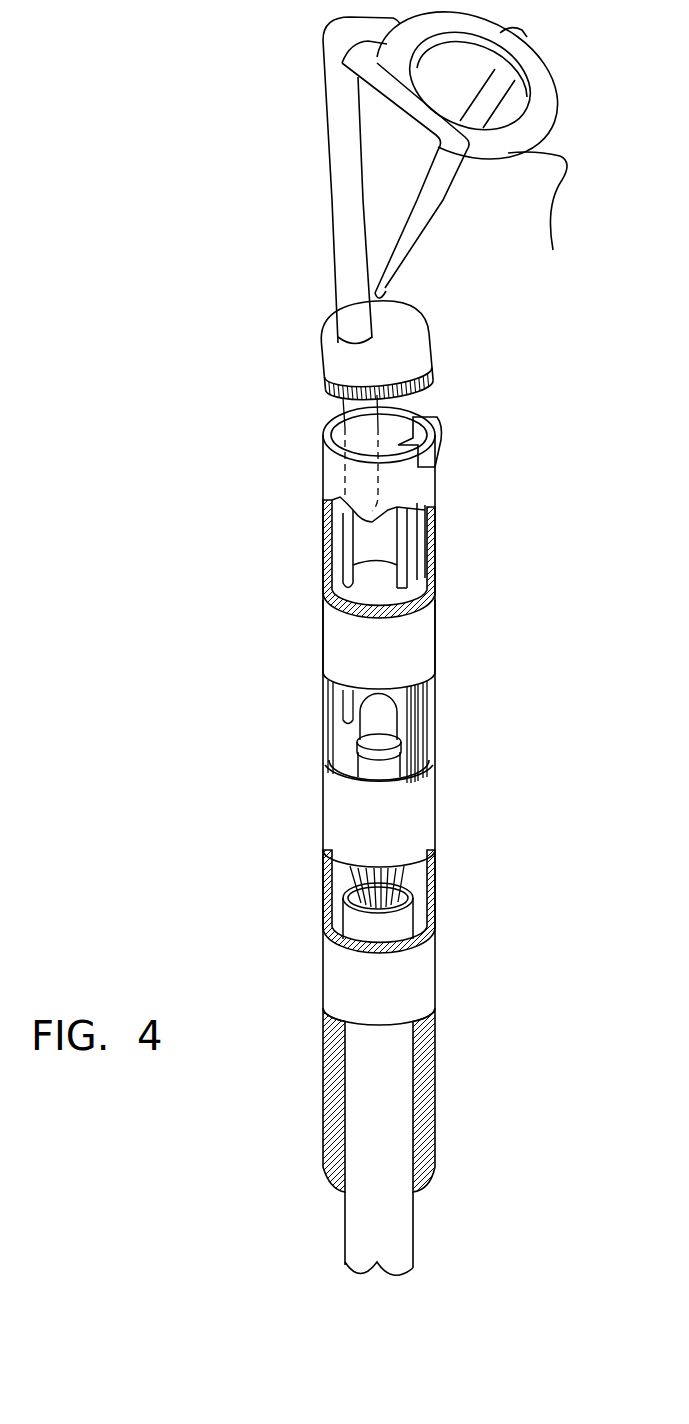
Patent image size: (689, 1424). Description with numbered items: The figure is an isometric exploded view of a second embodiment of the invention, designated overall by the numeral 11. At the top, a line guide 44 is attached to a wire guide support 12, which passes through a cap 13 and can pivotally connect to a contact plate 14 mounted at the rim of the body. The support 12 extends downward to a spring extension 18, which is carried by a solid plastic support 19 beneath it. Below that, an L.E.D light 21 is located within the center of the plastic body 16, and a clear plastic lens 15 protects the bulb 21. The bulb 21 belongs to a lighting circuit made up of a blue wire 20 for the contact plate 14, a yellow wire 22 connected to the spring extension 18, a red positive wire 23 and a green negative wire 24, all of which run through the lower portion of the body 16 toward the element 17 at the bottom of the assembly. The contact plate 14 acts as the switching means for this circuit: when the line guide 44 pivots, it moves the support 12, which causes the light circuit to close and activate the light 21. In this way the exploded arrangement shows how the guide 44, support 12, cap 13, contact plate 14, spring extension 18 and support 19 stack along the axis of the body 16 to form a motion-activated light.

The second embodiment 11 is at (205, 295).
The wire guide support 12 is at (320, 305).
The cap 13 is at (432, 350).
The contact plate 14 is at (430, 430).
The clear plastic lens 15 is at (420, 778).
The plastic body 16 is at (332, 1078).
The rod 17 is at (403, 1242).
The spring extension 18 is at (345, 552).
The solid plastic support 19 is at (417, 653).
The blue wire 20 is at (421, 728).
The L.E.D light 21 is at (380, 717).
The yellow wire 22 is at (352, 777).
The red wire 23 is at (360, 888).
The green wire 24 is at (437, 938).
The line guide 44 is at (554, 163).